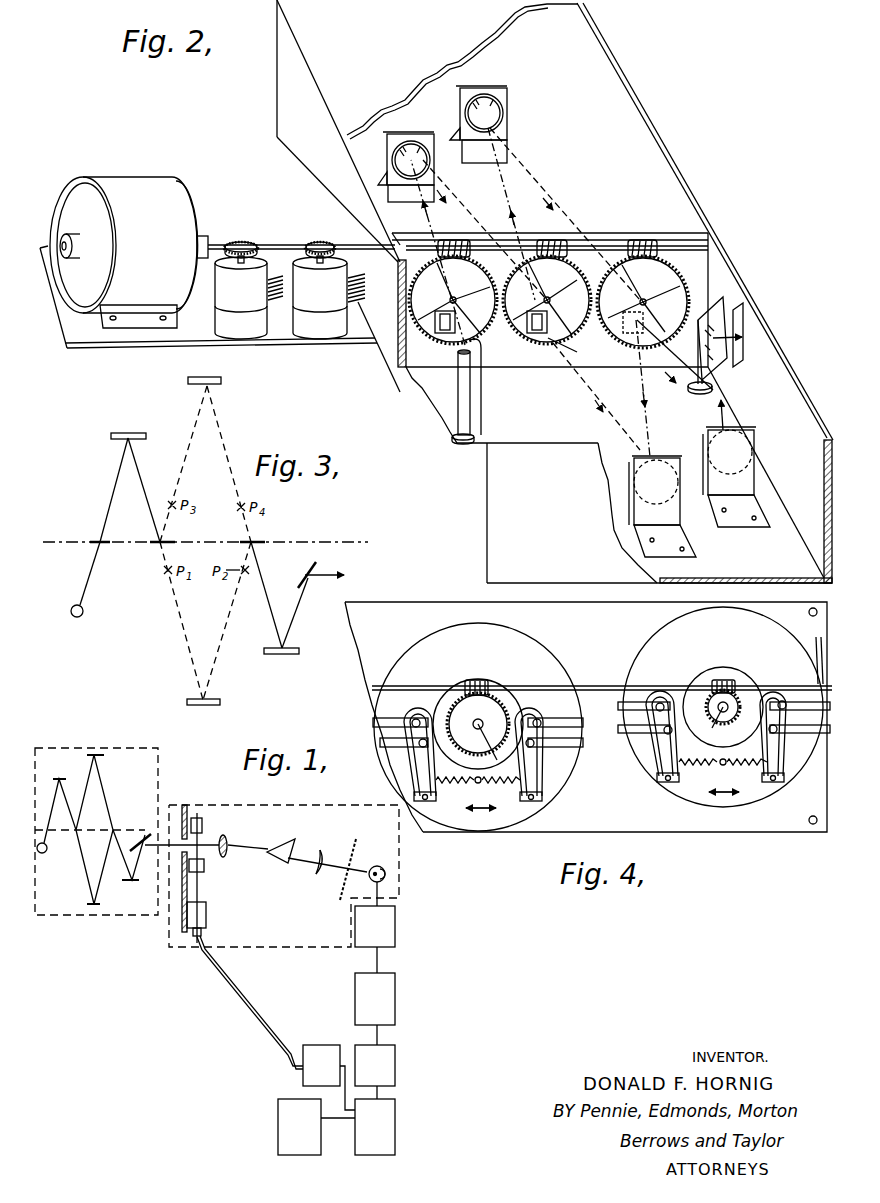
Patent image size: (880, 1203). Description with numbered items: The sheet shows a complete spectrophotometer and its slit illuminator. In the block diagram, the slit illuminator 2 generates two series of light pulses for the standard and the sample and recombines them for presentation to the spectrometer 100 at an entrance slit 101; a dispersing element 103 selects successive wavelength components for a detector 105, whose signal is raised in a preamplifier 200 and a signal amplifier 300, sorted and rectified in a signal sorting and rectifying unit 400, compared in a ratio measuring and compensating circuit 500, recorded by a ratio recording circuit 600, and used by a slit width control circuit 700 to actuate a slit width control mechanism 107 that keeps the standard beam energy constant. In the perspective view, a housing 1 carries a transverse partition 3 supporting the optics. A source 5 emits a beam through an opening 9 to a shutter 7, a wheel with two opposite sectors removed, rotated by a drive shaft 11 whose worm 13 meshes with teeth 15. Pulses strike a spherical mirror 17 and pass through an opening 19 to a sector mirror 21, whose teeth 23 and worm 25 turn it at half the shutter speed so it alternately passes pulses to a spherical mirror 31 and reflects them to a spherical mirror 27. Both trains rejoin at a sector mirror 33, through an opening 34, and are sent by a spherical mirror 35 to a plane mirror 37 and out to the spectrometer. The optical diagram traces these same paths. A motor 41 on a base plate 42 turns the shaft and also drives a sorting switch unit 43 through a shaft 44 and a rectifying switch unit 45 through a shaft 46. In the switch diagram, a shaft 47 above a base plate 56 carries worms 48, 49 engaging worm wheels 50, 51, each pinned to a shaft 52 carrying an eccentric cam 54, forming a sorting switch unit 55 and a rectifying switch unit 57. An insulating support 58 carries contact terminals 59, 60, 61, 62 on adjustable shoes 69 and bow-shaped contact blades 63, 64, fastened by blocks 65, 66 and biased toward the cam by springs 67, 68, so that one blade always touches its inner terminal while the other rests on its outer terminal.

In FIG. 2, the housing 1 is at (426, 450).
In FIG. 1, the slit illuminator 2 is at (93, 914).
In FIG. 2, the transverse partition 3 is at (702, 261).
In FIG. 3, the transverse partition 3 is at (336, 542).
In FIG. 2, the source 5 is at (466, 398).
In FIG. 3, the source 5 is at (84, 611).
In FIG. 2, the shutter 7 is at (487, 316).
In FIG. 3, the shutter 7 is at (104, 540).
In FIG. 2, the opening 9 is at (452, 333).
In FIG. 2, the drive shaft 11 is at (358, 244).
In FIG. 2, the worm 13 is at (460, 243).
In FIG. 2, the teeth 15 is at (490, 282).
In FIG. 2, the spherical mirror 17 is at (420, 161).
In FIG. 3, the spherical mirror 17 is at (138, 434).
In FIG. 2, the opening 19 is at (537, 333).
In FIG. 2, the sector mirror 21 is at (580, 310).
In FIG. 3, the sector mirror 21 is at (166, 541).
In FIG. 2, the teeth 23 is at (573, 353).
In FIG. 2, the worm 25 is at (552, 240).
In FIG. 2, the spherical mirror 27 is at (500, 112).
In FIG. 3, the spherical mirror 27 is at (222, 383).
In FIG. 2, the spherical mirror 31 is at (653, 452).
In FIG. 3, the spherical mirror 31 is at (192, 700).
In FIG. 2, the sector mirror 33 is at (673, 276).
In FIG. 3, the sector mirror 33 is at (262, 541).
In FIG. 2, the opening 34 is at (630, 333).
In FIG. 2, the spherical mirror 35 is at (702, 492).
In FIG. 3, the spherical mirror 35 is at (298, 648).
In FIG. 2, the plane mirror 37 is at (726, 308).
In FIG. 3, the plane mirror 37 is at (303, 572).
In FIG. 2, the motor 41 is at (136, 180).
In FIG. 2, the base plate 42 is at (145, 343).
In FIG. 2, the sorting switch unit 43 is at (246, 307).
In FIG. 2, the shaft 44 is at (255, 244).
In FIG. 2, the rectifying switch unit 45 is at (325, 307).
In FIG. 2, the shaft 46 is at (305, 243).
In FIG. 4, the shaft 47 is at (610, 686).
In FIG. 4, the worm 48 is at (489, 684).
In FIG. 4, the worm 49 is at (740, 682).
In FIG. 4, the worm wheel 50 is at (505, 711).
In FIG. 4, the worm wheel 51 is at (736, 718).
In FIG. 4, the shaft 52 is at (712, 729).
In FIG. 4, the cam 54 is at (441, 698).
In FIG. 4, the sorting switch unit 55 is at (480, 834).
In FIG. 4, the base plate 56 is at (513, 832).
In FIG. 4, the rectifying switch unit 57 is at (745, 834).
In FIG. 4, the insulating support 58 is at (488, 653).
In FIG. 4, the contact terminal 59 is at (414, 720).
In FIG. 4, the contact terminal 60 is at (420, 745).
In FIG. 4, the contact terminal 61 is at (540, 718).
In FIG. 4, the contact terminal 62 is at (533, 748).
In FIG. 4, the contact blade 63 is at (410, 773).
In FIG. 4, the contact blade 64 is at (542, 770).
In FIG. 4, the block 65 is at (426, 801).
In FIG. 4, the block 66 is at (536, 803).
In FIG. 4, the spring 67 is at (462, 783).
In FIG. 4, the spring 68 is at (490, 783).
In FIG. 4, the shoes 69 is at (375, 722).
In FIG. 1, the spectrometer 100 is at (395, 851).
In FIG. 1, the entrance slit 101 is at (194, 840).
In FIG. 1, the dispersing element 103 is at (296, 840).
In FIG. 1, the detector 105 is at (386, 876).
In FIG. 1, the slit width control mechanism 107 is at (207, 917).
In FIG. 1, the preamplifier 200 is at (393, 924).
In FIG. 1, the signal amplifier 300 is at (391, 1006).
In FIG. 1, the signal sorting and rectifying unit 400 is at (390, 1069).
In FIG. 1, the ratio measuring and compensating circuit 500 is at (394, 1129).
In FIG. 1, the ratio recording circuit 600 is at (284, 1129).
In FIG. 1, the slit width control circuit 700 is at (321, 1046).